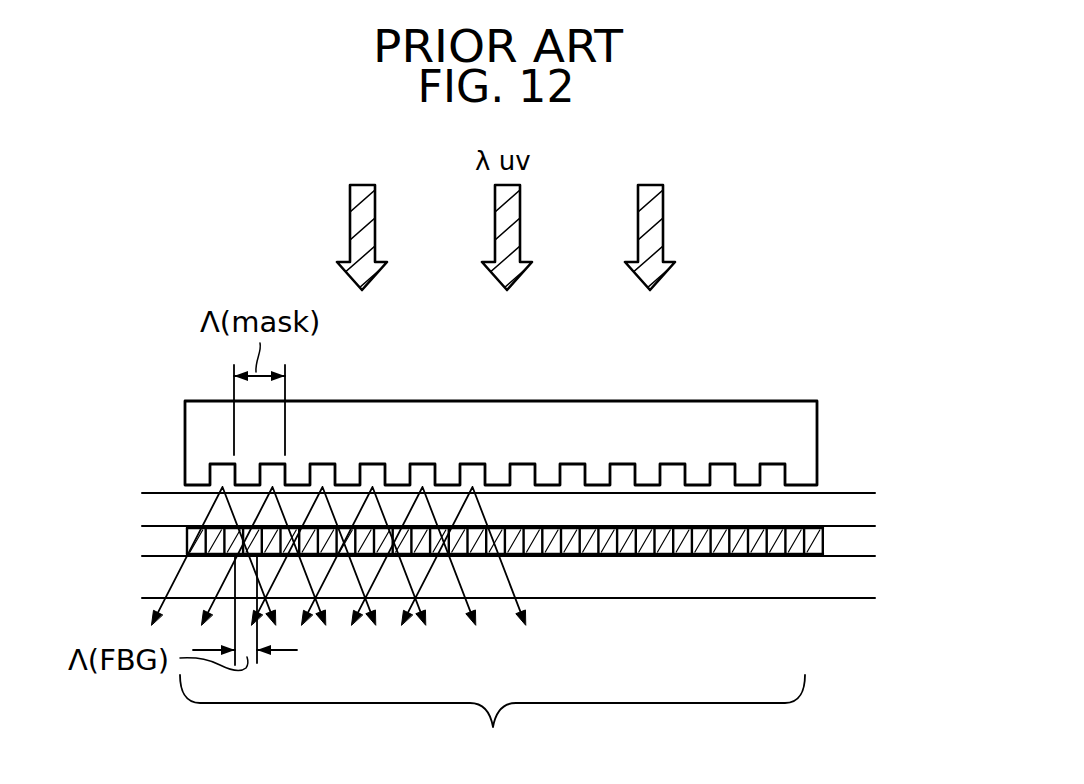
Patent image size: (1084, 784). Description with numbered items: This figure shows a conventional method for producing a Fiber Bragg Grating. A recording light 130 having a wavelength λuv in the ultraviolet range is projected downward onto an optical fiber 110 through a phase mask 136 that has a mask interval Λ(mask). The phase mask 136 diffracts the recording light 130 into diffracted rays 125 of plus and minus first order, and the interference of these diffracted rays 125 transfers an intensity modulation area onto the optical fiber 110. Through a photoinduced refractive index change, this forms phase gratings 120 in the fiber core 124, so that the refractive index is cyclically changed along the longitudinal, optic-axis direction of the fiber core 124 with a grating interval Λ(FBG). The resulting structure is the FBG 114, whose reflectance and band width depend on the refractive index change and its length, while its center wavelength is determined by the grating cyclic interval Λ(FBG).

The optical fiber 110 is at (840, 508).
The FBG 114 is at (492, 719).
The phase gratings 120 is at (823, 540).
The fiber core 124 is at (847, 550).
The diffracted rays 125 is at (170, 582).
The recording light 130 is at (662, 213).
The phase mask 136 is at (760, 432).